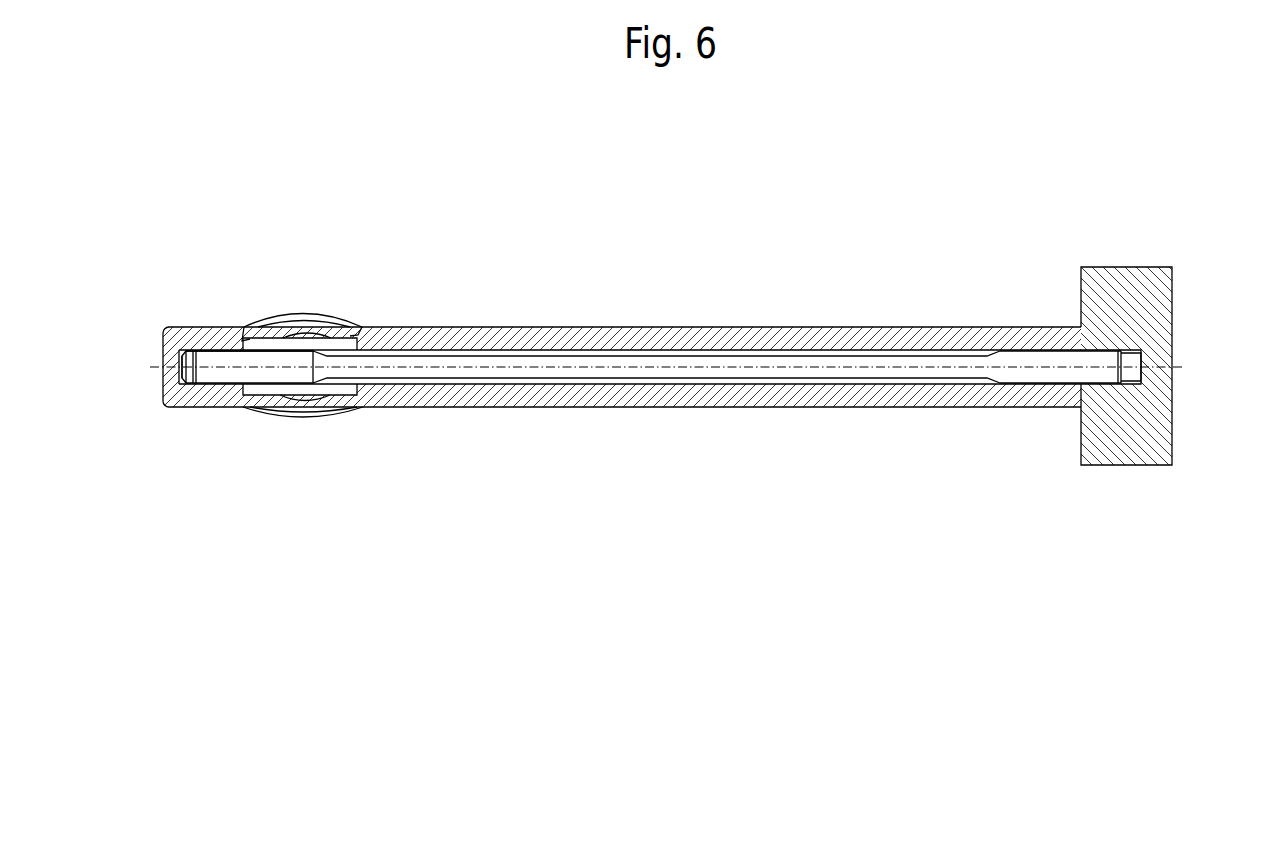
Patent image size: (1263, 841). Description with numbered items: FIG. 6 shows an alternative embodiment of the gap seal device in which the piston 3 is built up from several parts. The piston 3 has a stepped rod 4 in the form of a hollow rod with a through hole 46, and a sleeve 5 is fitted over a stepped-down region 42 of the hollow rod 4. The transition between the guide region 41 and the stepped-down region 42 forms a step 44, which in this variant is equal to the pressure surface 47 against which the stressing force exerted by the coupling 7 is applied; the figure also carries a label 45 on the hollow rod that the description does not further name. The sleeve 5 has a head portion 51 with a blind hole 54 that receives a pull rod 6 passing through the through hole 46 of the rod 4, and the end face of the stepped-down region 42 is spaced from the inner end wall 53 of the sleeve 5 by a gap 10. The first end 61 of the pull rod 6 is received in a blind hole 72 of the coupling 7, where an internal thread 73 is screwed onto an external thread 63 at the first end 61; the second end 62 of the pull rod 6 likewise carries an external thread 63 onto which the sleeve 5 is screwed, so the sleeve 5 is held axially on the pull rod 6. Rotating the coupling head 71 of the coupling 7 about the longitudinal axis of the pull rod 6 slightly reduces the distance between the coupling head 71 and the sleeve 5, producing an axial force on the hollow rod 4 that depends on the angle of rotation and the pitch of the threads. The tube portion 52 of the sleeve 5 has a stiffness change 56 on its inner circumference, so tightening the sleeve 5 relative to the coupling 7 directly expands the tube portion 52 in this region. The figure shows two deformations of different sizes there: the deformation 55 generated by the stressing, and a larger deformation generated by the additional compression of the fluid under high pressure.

The piston 3 is at (828, 252).
The stepped rod 4 is at (622, 347).
The guide region 41 is at (709, 400).
The stepped-down region 42 is at (344, 392).
The step 44 is at (322, 263).
The pressure surface 47 is at (353, 334).
The housing end face 45 is at (1085, 388).
The through hole 46 is at (590, 350).
The sleeve 5 is at (652, 356).
The head portion 51 is at (188, 352).
The tube portion 52 is at (273, 398).
The inner end wall 53 is at (291, 468).
The blind hole 54 is at (188, 376).
The deformation 55 is at (301, 254).
The stiffness change 56 is at (310, 400).
The pull rod 6 is at (777, 321).
The first end 61 is at (1042, 362).
The second end 62 is at (203, 357).
The external thread 63 is at (227, 350).
The gap 10 is at (242, 340).
The coupling 7 is at (1156, 369).
The coupling head 71 is at (1158, 305).
The blind hole 72 is at (1128, 362).
The internal thread 73 is at (1100, 383).